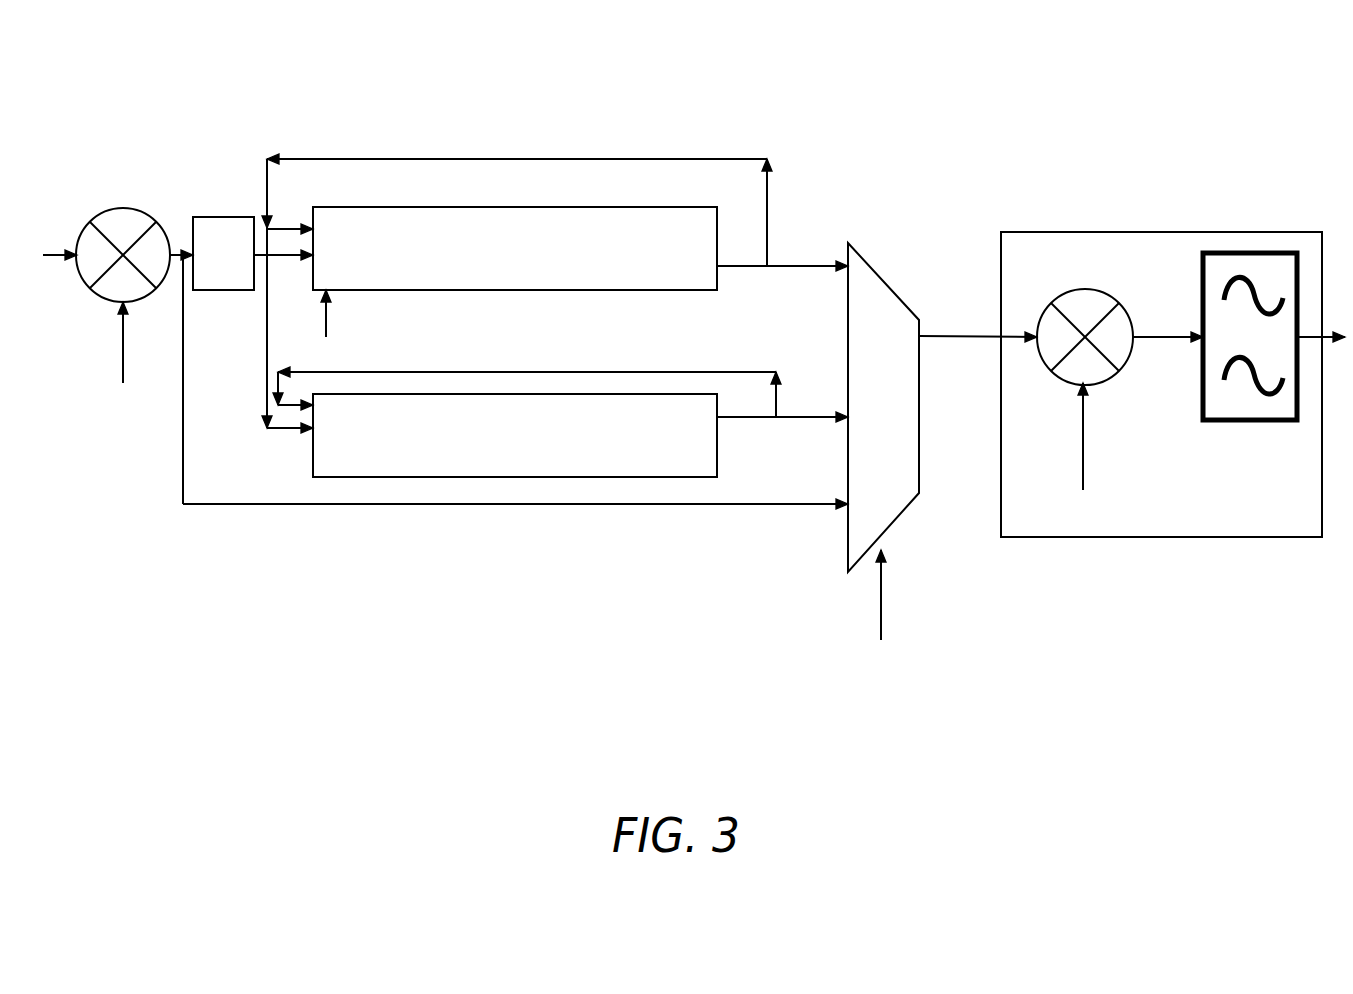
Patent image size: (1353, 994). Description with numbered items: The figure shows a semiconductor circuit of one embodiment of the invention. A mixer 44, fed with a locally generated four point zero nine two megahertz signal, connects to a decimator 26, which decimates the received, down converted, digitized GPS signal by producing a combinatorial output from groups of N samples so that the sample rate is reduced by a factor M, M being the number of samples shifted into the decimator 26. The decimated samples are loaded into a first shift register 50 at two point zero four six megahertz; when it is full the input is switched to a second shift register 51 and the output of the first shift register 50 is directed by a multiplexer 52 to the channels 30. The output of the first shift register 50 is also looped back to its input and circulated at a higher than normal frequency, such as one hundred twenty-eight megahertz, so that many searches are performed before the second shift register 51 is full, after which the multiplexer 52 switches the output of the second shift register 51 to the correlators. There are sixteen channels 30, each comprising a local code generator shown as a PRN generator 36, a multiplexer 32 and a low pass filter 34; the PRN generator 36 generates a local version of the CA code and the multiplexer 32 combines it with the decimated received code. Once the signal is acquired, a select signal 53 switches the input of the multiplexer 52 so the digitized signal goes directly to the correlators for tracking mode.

The mixer 44 is at (111, 183).
The decimator 26 is at (220, 210).
The first shift register 50 is at (682, 197).
The second shift register 51 is at (633, 490).
The multiplexer 52 is at (837, 537).
The select signal 53 is at (927, 642).
The channels 30 is at (1137, 127).
The multiplexer 32 is at (1052, 295).
The low pass filter 34 is at (1182, 280).
The PRN generator 36 is at (1083, 527).